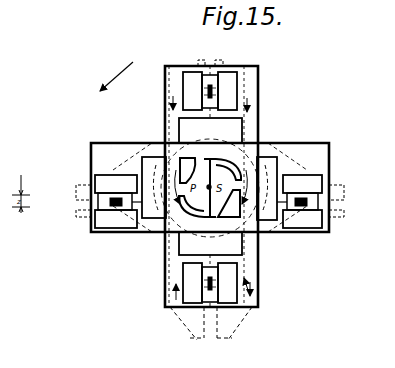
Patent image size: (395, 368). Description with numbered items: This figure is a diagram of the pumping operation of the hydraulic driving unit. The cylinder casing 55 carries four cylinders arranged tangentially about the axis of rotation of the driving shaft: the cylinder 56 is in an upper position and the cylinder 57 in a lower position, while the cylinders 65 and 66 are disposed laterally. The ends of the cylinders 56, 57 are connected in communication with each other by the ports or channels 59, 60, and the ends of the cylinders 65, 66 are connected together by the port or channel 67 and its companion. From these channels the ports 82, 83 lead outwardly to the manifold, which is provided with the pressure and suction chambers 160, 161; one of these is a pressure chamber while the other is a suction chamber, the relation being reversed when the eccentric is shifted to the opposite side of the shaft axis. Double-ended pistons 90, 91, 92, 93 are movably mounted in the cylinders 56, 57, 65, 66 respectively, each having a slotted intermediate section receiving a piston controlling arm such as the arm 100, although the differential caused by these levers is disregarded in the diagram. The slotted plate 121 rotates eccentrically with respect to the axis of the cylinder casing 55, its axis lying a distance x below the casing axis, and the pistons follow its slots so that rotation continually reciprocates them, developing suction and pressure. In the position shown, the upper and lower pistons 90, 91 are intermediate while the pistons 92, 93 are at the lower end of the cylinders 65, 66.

The cylinder casing 55 is at (259, 91).
The cylinder 56 is at (231, 68).
The cylinder 57 is at (250, 308).
The port or channel 59 is at (165, 141).
The port or channel 60 is at (244, 141).
The cylinder 65 is at (102, 160).
The cylinder 66 is at (329, 162).
The port or channel 67 is at (259, 116).
The port 82 is at (200, 207).
The port 83 is at (262, 234).
The piston 90 is at (191, 80).
The piston 91 is at (233, 286).
The piston 92 is at (113, 226).
The piston 93 is at (312, 185).
The piston controlling arm 100 is at (213, 90).
The slotted plate 121 is at (272, 258).
The pressure and suction chamber 160 is at (205, 226).
The pressure and suction chamber 161 is at (248, 155).